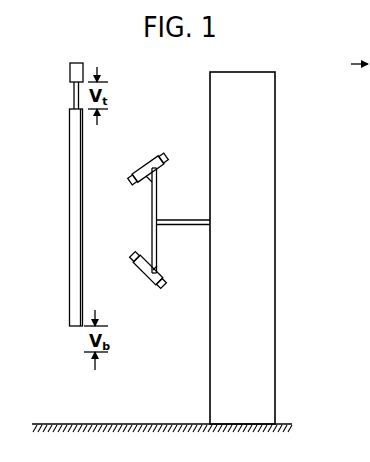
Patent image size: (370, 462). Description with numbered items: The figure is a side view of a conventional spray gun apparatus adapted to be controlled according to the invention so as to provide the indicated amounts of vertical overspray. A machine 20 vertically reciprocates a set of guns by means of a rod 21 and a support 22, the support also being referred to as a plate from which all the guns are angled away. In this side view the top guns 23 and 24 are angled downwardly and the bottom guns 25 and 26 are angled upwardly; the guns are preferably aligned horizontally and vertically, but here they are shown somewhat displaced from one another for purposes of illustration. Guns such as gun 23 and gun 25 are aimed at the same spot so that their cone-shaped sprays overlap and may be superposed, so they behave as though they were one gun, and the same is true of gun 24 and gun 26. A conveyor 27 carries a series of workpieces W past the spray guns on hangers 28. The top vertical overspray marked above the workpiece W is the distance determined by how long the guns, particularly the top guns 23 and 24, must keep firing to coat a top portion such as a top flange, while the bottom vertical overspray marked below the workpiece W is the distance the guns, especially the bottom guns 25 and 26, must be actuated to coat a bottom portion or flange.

The machine 20 is at (278, 134).
The rod 21 is at (177, 226).
The support 22 is at (157, 184).
The top gun 23 is at (146, 162).
The top gun 24 is at (145, 181).
The bottom gun 25 is at (146, 278).
The bottom gun 26 is at (162, 272).
The conveyor 27 is at (75, 75).
The hanger 28 is at (74, 95).
The workpiece W is at (69, 228).